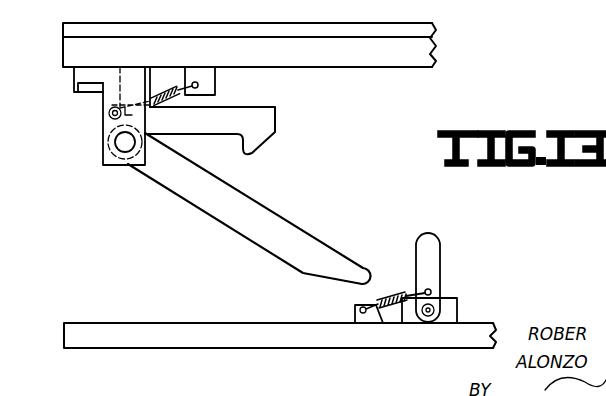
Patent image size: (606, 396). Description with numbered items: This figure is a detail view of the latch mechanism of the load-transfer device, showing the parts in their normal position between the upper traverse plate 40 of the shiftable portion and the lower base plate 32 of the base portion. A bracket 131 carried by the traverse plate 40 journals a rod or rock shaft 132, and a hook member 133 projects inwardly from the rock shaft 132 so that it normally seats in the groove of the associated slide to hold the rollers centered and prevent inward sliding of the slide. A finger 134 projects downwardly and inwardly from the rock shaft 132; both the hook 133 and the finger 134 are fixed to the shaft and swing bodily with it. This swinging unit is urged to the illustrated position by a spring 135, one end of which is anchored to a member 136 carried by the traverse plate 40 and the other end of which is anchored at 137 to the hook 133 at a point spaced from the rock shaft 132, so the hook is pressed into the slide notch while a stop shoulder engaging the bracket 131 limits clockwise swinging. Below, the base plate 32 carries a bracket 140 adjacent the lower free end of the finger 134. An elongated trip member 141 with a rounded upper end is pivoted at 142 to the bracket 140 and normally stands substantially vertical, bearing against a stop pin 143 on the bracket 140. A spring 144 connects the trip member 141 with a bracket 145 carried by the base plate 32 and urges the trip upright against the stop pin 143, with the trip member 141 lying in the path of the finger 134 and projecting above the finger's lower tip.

The traverse plate 40 is at (343, 48).
The base plate 32 is at (196, 344).
The bracket 131 is at (110, 93).
The rock shaft 132 is at (123, 143).
The hook member 133 is at (243, 120).
The finger 134 is at (218, 215).
The spring 135 is at (160, 100).
The anchor member 136 is at (216, 85).
The spring anchor point 137 is at (103, 122).
The bracket 140 is at (458, 313).
The trip member 141 is at (433, 263).
The pivot 142 is at (437, 308).
The stop pin 143 is at (415, 300).
The spring 144 is at (390, 300).
The bracket 145 is at (368, 318).